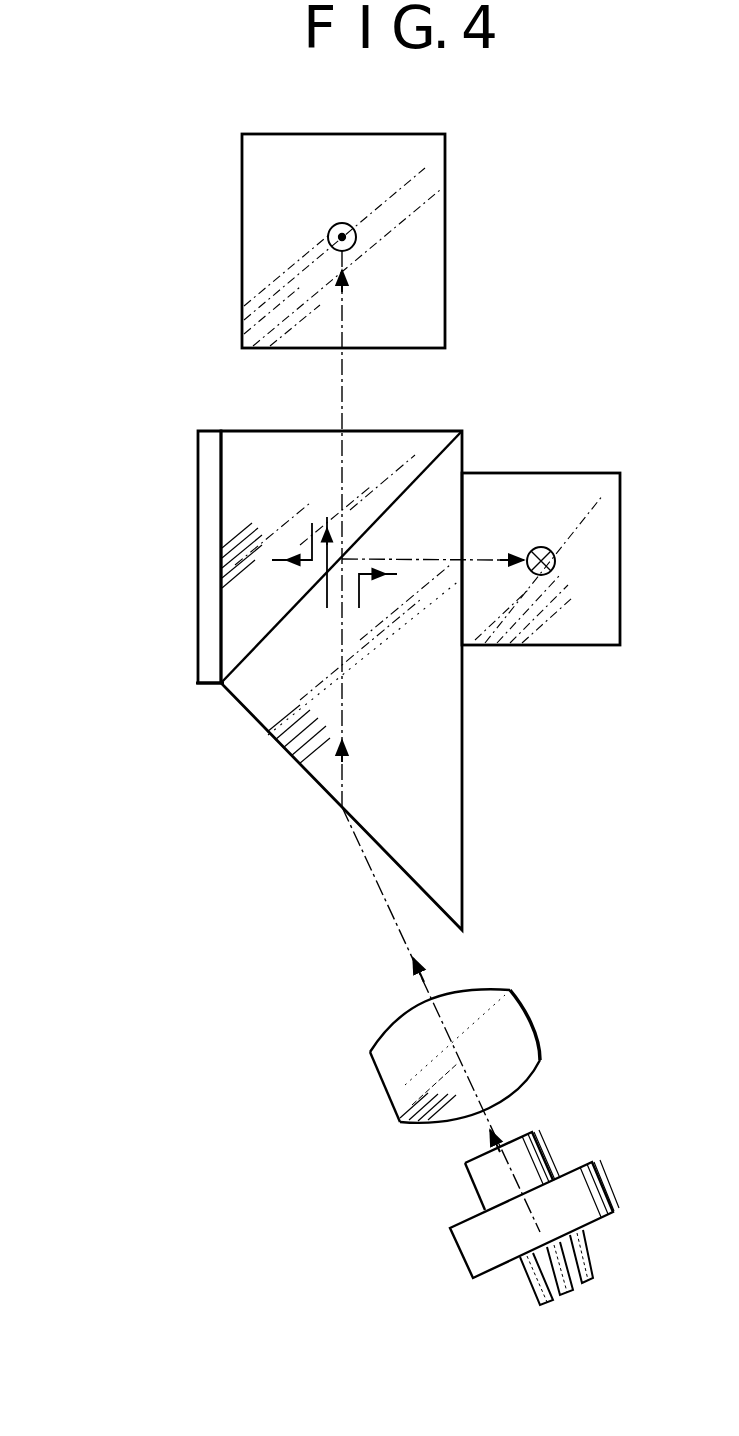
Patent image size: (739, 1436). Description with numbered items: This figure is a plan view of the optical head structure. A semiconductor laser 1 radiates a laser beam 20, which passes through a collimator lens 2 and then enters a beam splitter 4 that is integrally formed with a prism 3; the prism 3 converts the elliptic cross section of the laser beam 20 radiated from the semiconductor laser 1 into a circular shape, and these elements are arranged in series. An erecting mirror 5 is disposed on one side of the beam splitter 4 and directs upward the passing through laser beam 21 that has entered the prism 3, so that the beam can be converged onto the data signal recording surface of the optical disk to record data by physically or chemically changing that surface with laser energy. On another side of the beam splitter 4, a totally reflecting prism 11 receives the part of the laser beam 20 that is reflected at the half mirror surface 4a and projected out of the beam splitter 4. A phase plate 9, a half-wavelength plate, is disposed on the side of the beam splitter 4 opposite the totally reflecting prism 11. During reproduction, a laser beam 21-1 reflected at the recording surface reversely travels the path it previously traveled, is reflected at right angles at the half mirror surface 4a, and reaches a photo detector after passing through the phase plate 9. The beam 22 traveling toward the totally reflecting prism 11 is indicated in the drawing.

The semiconductor laser 1 is at (473, 1230).
The collimator lens 2 is at (400, 1073).
The prism 3 is at (318, 753).
The beam splitter 4 is at (268, 473).
The half mirror surface 4a is at (273, 630).
The erecting mirror 5 is at (446, 228).
The phase plate 9 is at (200, 443).
The totally reflecting prism 11 is at (573, 647).
The laser beam 20 is at (368, 874).
The passing through laser beam 21 is at (343, 449).
The reflected laser beam 21-1 is at (312, 538).
The detection beam 22 is at (493, 557).